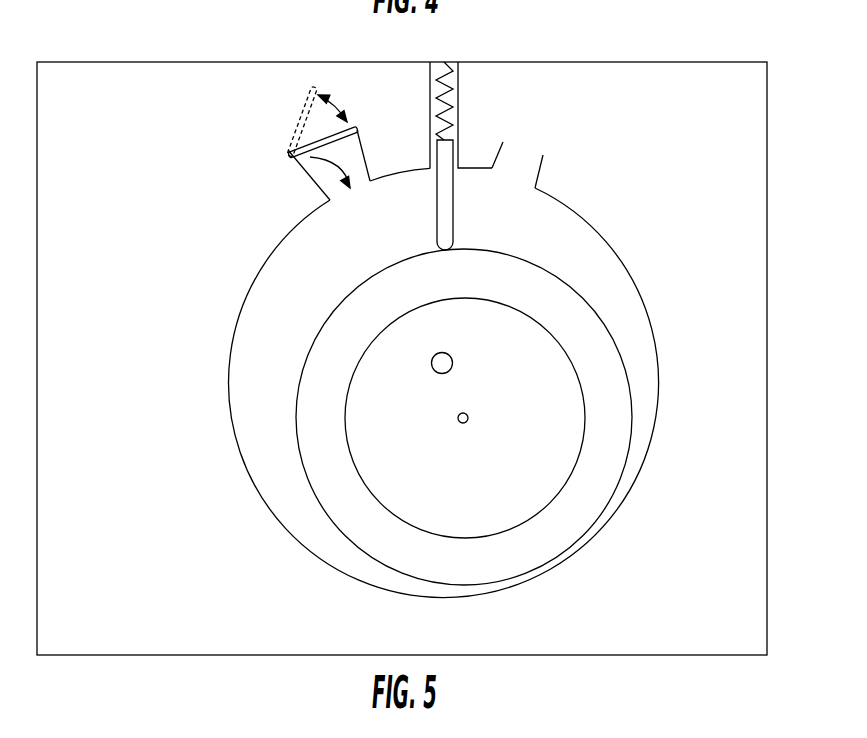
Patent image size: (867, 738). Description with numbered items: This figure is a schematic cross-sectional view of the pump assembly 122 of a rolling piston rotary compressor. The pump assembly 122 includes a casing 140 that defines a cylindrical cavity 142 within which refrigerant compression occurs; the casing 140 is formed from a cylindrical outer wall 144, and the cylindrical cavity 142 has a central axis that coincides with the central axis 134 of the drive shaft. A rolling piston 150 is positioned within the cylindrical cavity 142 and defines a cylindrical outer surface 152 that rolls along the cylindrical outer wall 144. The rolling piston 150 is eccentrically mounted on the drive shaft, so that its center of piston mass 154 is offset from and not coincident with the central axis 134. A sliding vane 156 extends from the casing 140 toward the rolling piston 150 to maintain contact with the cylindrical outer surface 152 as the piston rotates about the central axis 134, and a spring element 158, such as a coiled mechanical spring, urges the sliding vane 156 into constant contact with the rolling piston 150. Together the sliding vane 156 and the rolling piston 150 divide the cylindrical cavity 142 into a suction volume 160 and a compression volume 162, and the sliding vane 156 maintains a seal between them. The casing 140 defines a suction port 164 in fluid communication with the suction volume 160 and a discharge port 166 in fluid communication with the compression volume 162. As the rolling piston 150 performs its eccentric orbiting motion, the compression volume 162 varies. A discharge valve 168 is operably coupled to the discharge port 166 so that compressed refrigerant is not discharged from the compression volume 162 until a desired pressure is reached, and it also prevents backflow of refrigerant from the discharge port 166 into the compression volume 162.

The pump assembly 122 is at (712, 107).
The central axis 134 is at (432, 363).
The casing 140 is at (637, 288).
The cylindrical cavity 142 is at (530, 225).
The cylindrical outer wall 144 is at (653, 438).
The rolling piston 150 is at (368, 447).
The cylindrical outer surface 152 is at (385, 565).
The center of piston mass 154 is at (470, 422).
The sliding vane 156 is at (445, 183).
The spring element 158 is at (447, 88).
The suction volume 160 is at (587, 262).
The compression volume 162 is at (333, 256).
The suction port 164 is at (518, 160).
The discharge port 166 is at (317, 160).
The discharge valve 168 is at (303, 142).